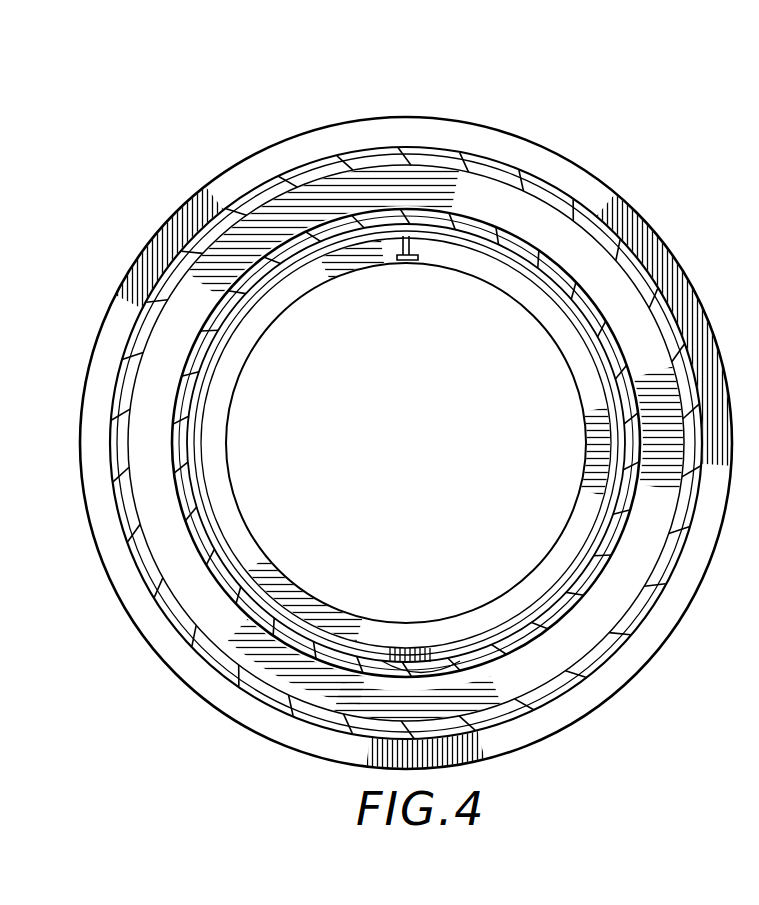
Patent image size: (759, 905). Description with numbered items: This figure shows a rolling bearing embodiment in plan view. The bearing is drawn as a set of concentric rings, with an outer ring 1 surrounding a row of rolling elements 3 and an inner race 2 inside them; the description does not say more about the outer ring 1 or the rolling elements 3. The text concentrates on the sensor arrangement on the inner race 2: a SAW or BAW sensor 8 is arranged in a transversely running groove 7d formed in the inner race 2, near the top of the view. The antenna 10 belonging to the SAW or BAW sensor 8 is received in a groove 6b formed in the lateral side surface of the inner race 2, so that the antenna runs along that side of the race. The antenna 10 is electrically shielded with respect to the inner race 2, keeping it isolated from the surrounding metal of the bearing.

The outer ring 1 is at (597, 200).
The inner race 2 is at (558, 325).
The rolling elements (balls) 3 is at (510, 175).
The groove 6b is at (610, 373).
The transversely running groove 7d is at (408, 262).
The SAW or BAW sensor 8 is at (400, 252).
The antenna 10 is at (337, 242).